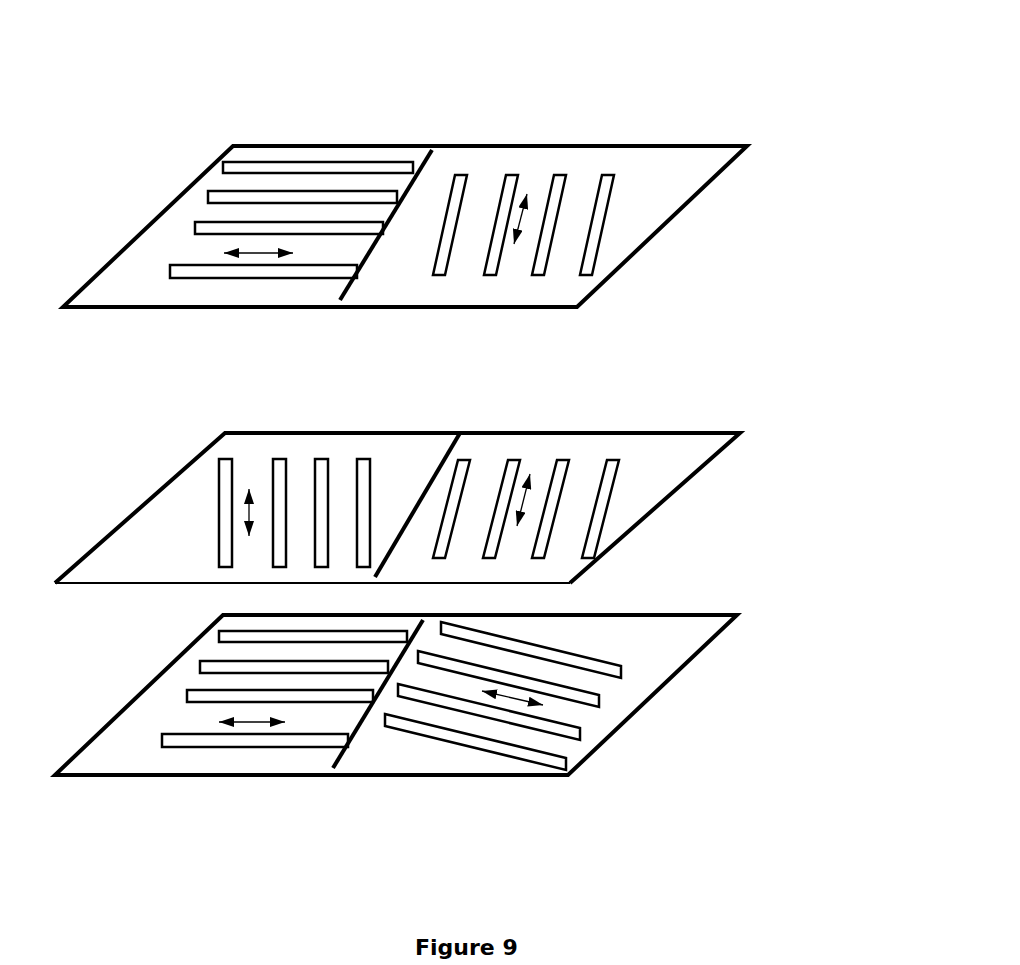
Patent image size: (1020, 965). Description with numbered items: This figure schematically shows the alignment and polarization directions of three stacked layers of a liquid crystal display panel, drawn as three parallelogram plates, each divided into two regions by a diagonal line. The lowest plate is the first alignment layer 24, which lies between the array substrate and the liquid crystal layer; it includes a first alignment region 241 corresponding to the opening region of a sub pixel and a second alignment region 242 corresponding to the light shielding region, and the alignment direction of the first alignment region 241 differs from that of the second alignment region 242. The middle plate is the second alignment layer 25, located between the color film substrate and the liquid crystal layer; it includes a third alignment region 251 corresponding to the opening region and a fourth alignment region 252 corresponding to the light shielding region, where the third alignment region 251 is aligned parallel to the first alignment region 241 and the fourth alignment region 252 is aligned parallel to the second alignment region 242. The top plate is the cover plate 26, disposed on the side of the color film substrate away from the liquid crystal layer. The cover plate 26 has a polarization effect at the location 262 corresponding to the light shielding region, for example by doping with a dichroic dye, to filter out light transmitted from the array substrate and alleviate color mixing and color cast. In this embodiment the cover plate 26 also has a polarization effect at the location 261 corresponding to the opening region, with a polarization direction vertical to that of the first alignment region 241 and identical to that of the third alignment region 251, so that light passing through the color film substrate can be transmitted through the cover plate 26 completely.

The first alignment layer 24 is at (698, 662).
The first alignment region 241 is at (442, 770).
The second alignment region 242 is at (172, 757).
The second alignment layer 25 is at (737, 431).
The third alignment region 251 is at (637, 447).
The fourth alignment region 252 is at (398, 447).
The cover plate 26 is at (698, 193).
The location corresponding to the opening region 261 is at (592, 158).
The location corresponding to the light shielding region 262 is at (330, 153).